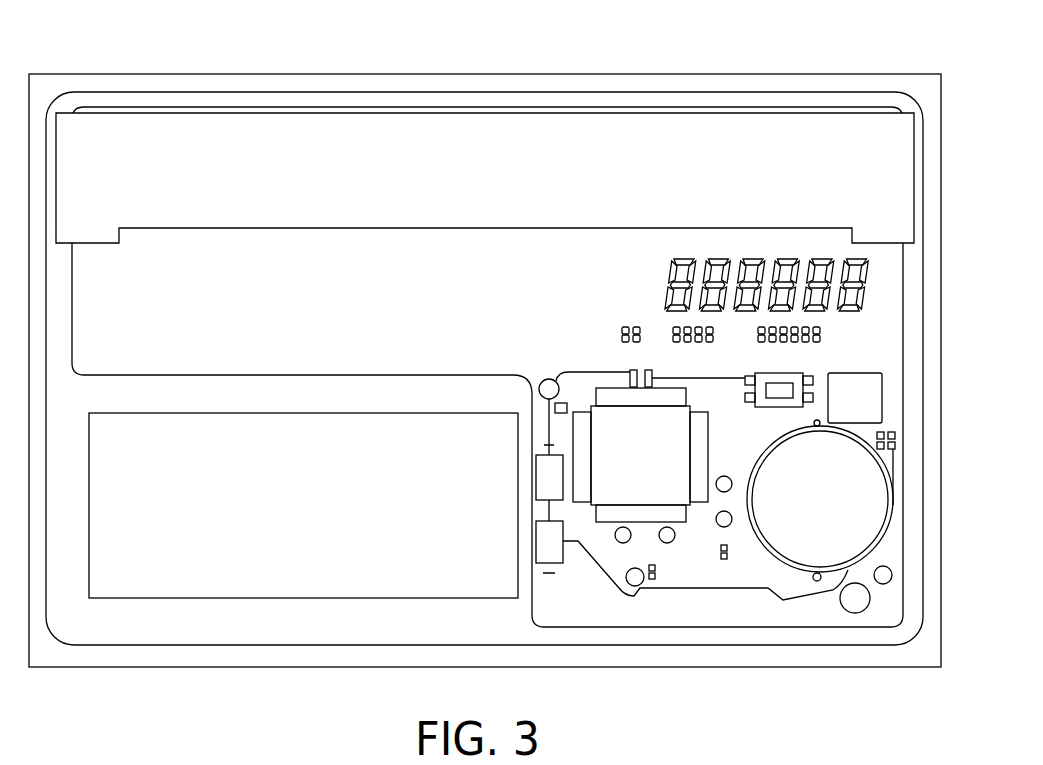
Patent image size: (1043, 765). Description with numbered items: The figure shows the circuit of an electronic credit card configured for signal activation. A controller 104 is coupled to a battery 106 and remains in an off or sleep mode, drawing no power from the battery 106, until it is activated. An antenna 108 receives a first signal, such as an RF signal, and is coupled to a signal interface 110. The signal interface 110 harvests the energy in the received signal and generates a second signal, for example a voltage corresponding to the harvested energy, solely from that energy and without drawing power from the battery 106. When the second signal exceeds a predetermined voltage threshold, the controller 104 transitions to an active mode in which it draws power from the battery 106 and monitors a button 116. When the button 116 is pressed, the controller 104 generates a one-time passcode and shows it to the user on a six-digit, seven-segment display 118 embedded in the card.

The controller 104 is at (645, 525).
The battery 106 is at (275, 548).
The antenna 108 is at (203, 117).
The signal interface 110 is at (880, 399).
The button 116 is at (855, 505).
The 6-digit, 7-segment display 118 is at (872, 291).